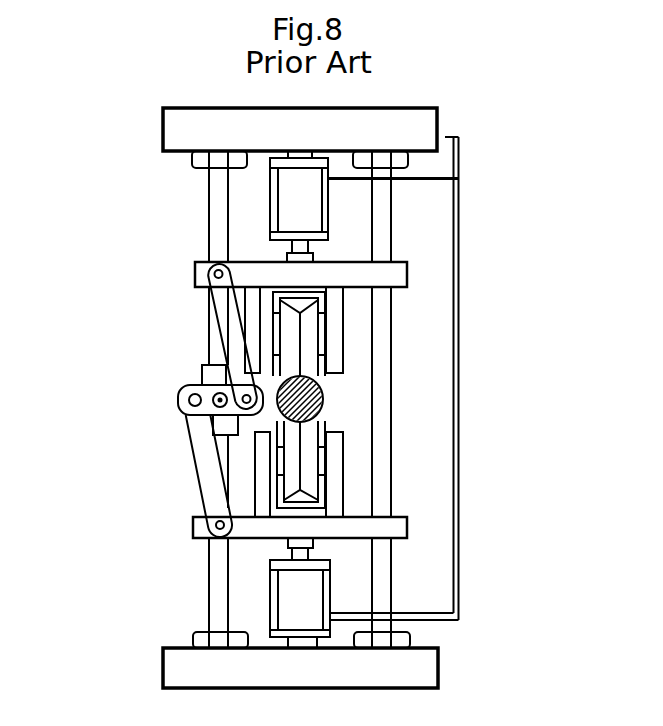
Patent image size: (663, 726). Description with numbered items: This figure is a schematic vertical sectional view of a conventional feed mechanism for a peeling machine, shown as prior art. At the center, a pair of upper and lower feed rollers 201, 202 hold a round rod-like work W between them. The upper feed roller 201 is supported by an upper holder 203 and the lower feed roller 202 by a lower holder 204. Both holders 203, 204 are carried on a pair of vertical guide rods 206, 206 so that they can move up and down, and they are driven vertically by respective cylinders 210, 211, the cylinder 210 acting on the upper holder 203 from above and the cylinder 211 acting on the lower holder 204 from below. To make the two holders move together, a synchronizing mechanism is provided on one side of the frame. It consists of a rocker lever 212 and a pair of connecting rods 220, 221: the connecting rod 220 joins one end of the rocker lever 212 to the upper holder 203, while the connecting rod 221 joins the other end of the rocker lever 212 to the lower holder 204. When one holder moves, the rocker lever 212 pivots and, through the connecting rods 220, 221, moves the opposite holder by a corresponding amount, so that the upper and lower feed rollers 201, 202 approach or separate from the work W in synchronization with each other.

The upper feed roller 201 is at (310, 350).
The lower feed roller 202 is at (307, 458).
The upper holder 203 is at (335, 340).
The lower holder 204 is at (335, 488).
The guide rod 206 is at (215, 612).
The cylinder 210 is at (287, 208).
The cylinder 211 is at (298, 600).
The rocker lever 212 is at (220, 402).
The connecting rod 220 is at (232, 331).
The connecting rod 221 is at (213, 475).
The work W is at (318, 403).